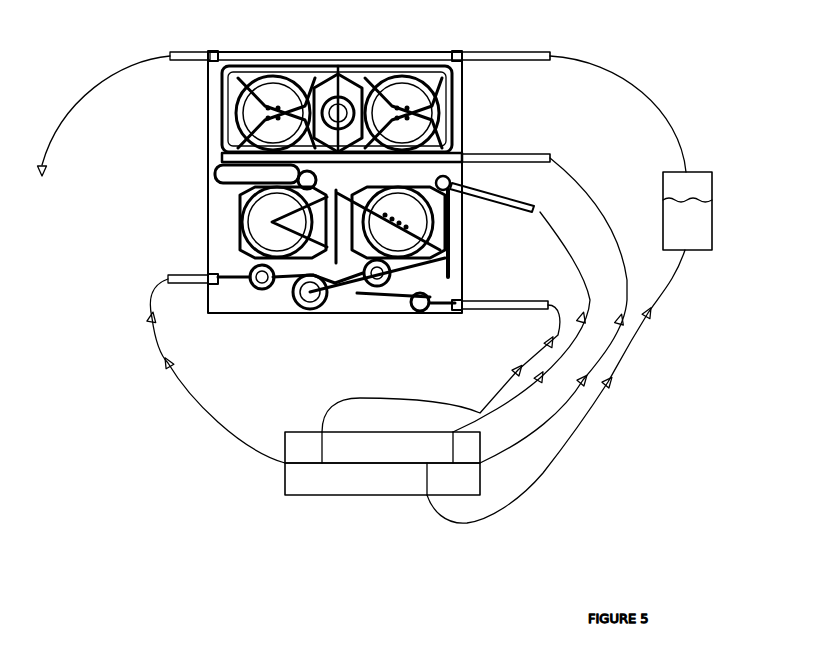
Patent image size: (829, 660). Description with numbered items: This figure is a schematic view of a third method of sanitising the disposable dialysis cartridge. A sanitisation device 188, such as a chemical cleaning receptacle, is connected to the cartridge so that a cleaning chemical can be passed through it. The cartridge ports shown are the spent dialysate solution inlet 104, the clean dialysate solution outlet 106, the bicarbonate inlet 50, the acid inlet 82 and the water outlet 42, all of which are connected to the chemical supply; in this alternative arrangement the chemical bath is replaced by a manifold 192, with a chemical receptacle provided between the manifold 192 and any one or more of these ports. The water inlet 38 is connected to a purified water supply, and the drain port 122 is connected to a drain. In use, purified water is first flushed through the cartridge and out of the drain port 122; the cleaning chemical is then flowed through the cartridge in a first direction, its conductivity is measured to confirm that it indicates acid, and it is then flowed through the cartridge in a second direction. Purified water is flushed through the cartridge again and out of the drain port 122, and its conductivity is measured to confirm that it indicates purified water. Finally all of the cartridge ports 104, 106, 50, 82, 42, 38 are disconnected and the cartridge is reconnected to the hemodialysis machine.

The drain port 122 is at (208, 52).
The spent dialysate solution inlet 104 is at (460, 52).
The clean dialysate solution outlet 106 is at (462, 157).
The water outlet 42 is at (450, 188).
The water inlet 38 is at (452, 268).
The bicarbonate inlet 50 is at (462, 303).
The acid inlet 82 is at (207, 275).
The sanitisation device 188 is at (690, 190).
The manifold 192 is at (300, 483).